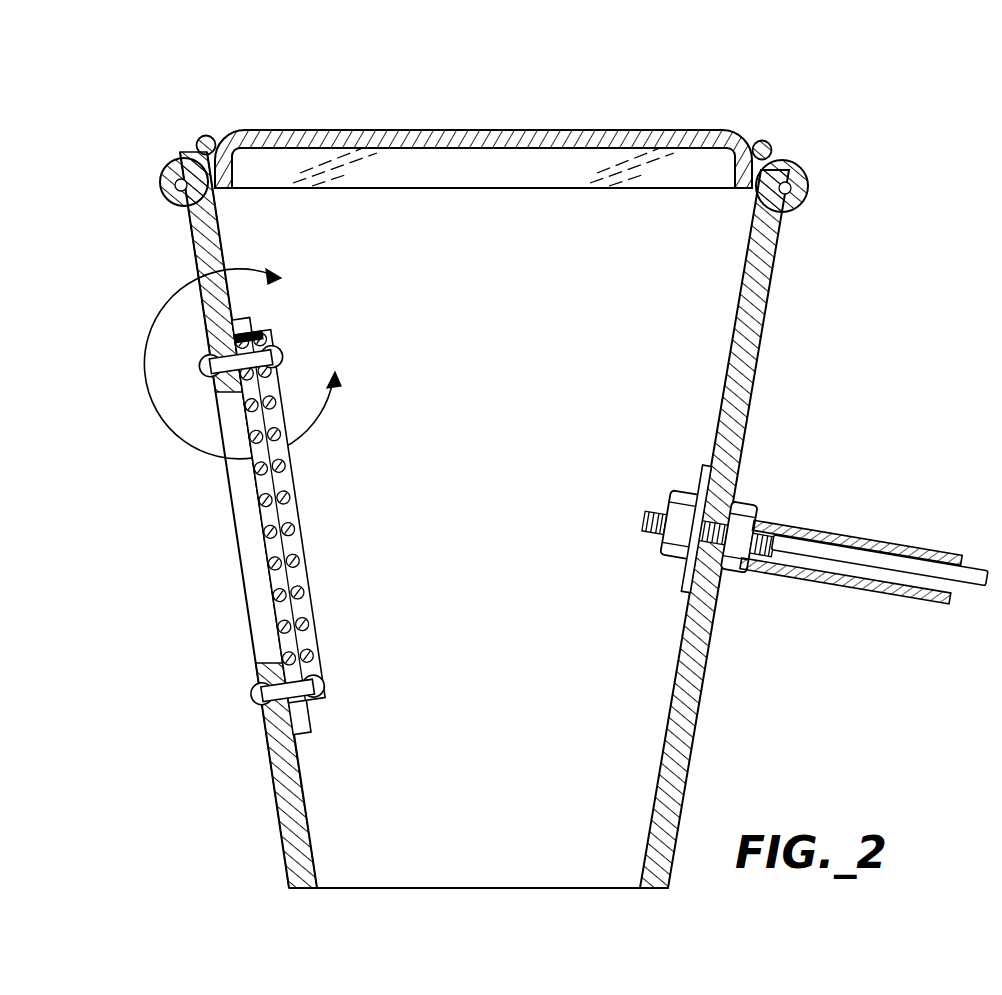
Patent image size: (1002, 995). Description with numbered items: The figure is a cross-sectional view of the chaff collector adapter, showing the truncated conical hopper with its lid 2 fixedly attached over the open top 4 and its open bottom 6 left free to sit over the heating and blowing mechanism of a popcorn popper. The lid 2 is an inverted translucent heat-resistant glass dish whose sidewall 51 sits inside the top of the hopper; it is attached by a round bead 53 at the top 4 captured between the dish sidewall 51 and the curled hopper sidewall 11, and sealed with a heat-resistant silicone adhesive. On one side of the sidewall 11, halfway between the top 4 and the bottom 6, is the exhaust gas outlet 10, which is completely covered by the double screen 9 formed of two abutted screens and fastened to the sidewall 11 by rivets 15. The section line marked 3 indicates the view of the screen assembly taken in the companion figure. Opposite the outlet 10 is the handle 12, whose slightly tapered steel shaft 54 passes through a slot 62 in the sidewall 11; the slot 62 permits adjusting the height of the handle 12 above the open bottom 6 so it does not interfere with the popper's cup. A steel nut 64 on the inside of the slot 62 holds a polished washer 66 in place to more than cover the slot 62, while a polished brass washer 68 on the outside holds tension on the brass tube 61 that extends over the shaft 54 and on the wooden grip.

The lid 2 is at (378, 130).
The section line 3- 3 is at (243, 362).
The open top 4 is at (230, 190).
The open bottom 6 is at (338, 868).
The double screen 9 is at (262, 556).
The exhaust gas outlet 10 is at (258, 627).
The sidewall 11 is at (758, 370).
The handle 12 is at (812, 512).
The rivets 15 is at (318, 674).
The sidewall 51 is at (720, 172).
The round bead 53 is at (769, 146).
The steel shaft 54 is at (977, 558).
The brass tube 61 is at (876, 582).
The slot 62 is at (708, 556).
The steel nut 64 is at (666, 552).
The polished washer 66 is at (697, 484).
The brass washer 68 is at (748, 494).